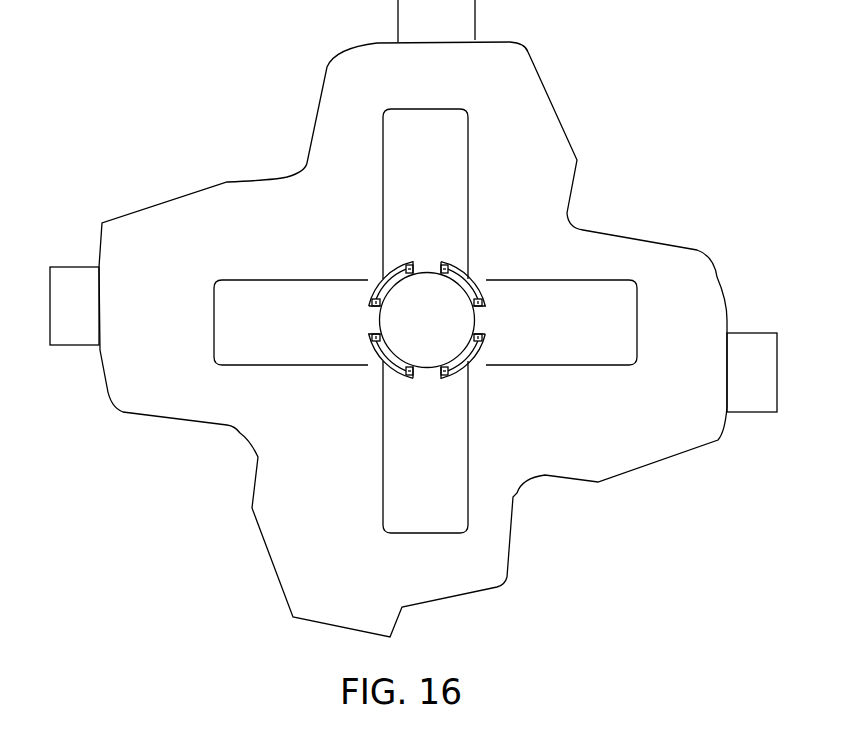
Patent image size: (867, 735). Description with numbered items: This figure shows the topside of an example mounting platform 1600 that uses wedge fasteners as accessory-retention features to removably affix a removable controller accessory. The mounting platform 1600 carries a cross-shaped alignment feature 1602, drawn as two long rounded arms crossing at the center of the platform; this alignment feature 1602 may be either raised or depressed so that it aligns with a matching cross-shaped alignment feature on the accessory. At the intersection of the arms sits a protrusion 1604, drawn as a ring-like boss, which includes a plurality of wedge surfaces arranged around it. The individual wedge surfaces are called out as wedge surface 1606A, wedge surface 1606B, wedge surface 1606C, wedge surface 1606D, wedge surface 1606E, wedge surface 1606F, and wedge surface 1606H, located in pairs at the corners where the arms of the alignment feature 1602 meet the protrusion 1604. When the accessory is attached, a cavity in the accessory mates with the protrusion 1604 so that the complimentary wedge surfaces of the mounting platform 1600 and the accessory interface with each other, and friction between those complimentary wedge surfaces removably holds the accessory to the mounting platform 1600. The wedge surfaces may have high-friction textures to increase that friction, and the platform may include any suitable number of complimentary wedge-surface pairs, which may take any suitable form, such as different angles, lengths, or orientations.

The mounting platform 1600 is at (189, 67).
The cross-shaped alignment feature 1602 is at (256, 280).
The protrusion 1604 is at (448, 331).
The wedge surface 1606A is at (446, 267).
The wedge surface 1606B is at (480, 299).
The wedge surface 1606C is at (480, 343).
The wedge surface 1606D is at (447, 373).
The wedge surface 1606E is at (407, 373).
The wedge surface 1606F is at (376, 343).
The wedge surface 1606H is at (410, 268).